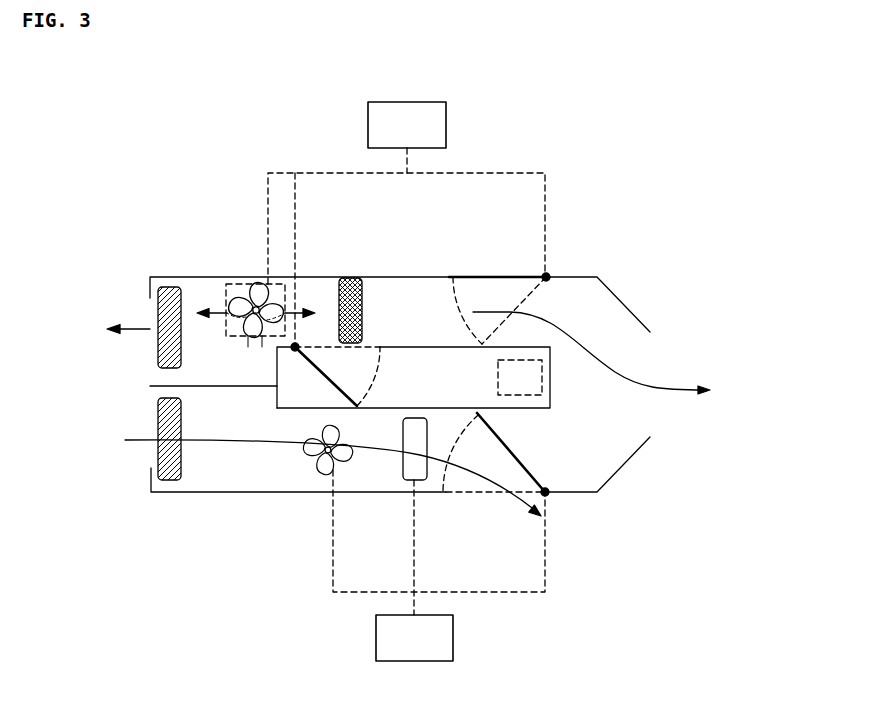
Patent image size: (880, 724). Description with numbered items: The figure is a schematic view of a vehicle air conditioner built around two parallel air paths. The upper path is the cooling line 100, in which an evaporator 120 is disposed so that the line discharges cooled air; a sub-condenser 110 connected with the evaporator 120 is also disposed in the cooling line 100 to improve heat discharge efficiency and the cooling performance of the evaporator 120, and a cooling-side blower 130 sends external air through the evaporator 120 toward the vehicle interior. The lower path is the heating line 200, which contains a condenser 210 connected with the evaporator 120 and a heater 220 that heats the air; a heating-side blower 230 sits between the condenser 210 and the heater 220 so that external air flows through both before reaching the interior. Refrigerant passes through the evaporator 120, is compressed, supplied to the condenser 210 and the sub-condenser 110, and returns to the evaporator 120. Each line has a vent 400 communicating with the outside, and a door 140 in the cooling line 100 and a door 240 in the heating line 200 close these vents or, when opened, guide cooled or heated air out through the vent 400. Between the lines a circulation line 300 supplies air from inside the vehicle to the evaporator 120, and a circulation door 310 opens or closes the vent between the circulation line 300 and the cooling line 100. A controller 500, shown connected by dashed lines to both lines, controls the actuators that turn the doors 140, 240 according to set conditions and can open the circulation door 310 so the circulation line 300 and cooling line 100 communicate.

The cooling line 100 is at (567, 307).
The sub-condenser 110 is at (168, 288).
The evaporator 120 is at (348, 279).
The cooling-side blower 130 is at (248, 293).
The door 140 is at (495, 274).
The heating line 200 is at (363, 464).
The condenser 210 is at (170, 481).
The heater 220 is at (420, 476).
The heating-side blower 230 is at (317, 463).
The door 240 is at (520, 457).
The circulation line 300 is at (453, 378).
The circulation door 310 is at (337, 383).
The vent 400 is at (495, 494).
The controller 500 is at (433, 102).